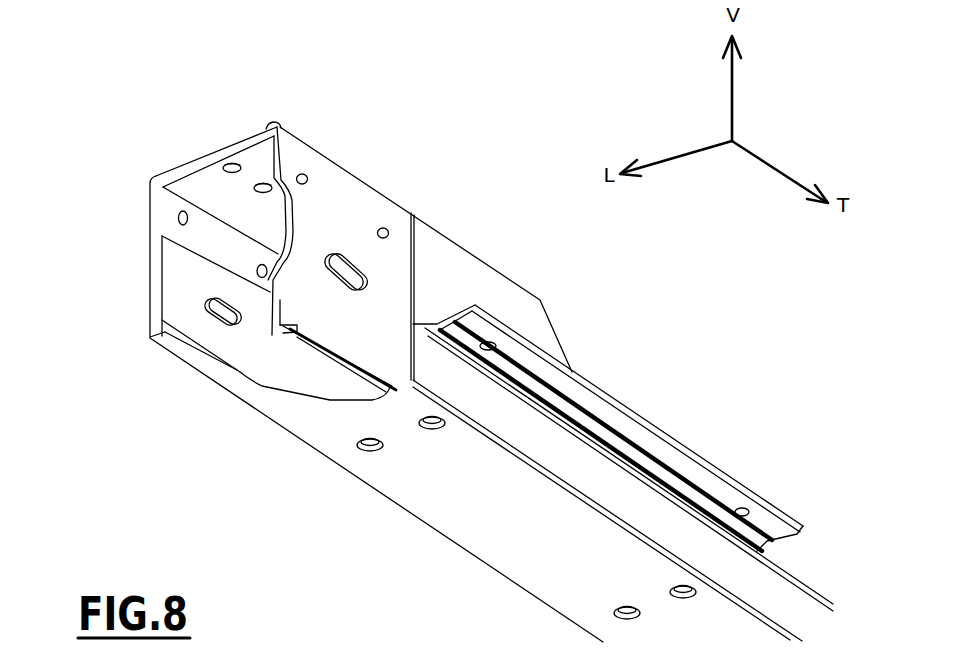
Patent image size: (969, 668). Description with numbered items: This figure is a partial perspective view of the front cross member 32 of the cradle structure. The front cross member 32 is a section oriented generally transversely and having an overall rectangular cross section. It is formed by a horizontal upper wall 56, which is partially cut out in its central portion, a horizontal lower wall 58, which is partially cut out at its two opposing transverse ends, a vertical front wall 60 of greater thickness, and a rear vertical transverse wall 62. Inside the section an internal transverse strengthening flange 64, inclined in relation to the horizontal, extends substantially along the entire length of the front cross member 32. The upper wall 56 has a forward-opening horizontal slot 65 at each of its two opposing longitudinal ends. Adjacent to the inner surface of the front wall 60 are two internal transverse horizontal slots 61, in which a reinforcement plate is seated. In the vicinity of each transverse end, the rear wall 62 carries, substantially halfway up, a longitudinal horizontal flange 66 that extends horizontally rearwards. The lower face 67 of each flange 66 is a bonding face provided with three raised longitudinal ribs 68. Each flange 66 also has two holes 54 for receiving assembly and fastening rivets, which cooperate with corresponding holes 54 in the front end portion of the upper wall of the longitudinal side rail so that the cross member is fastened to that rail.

The front cross member 32 is at (749, 443).
The holes 54 is at (384, 230).
The horizontal upper wall 56 is at (212, 158).
The horizontal lower wall 58 is at (412, 454).
The vertical front wall 60 is at (153, 260).
The internal transverse horizontal slots 61 is at (283, 333).
The rear vertical transverse wall 62 is at (455, 261).
The internal transverse strengthening flange 64 is at (750, 514).
The forward-opening horizontal slot 65 is at (268, 124).
The longitudinal horizontal flange 66 is at (656, 409).
The lower face 67 is at (721, 493).
The raised longitudinal ribs 68 is at (548, 385).